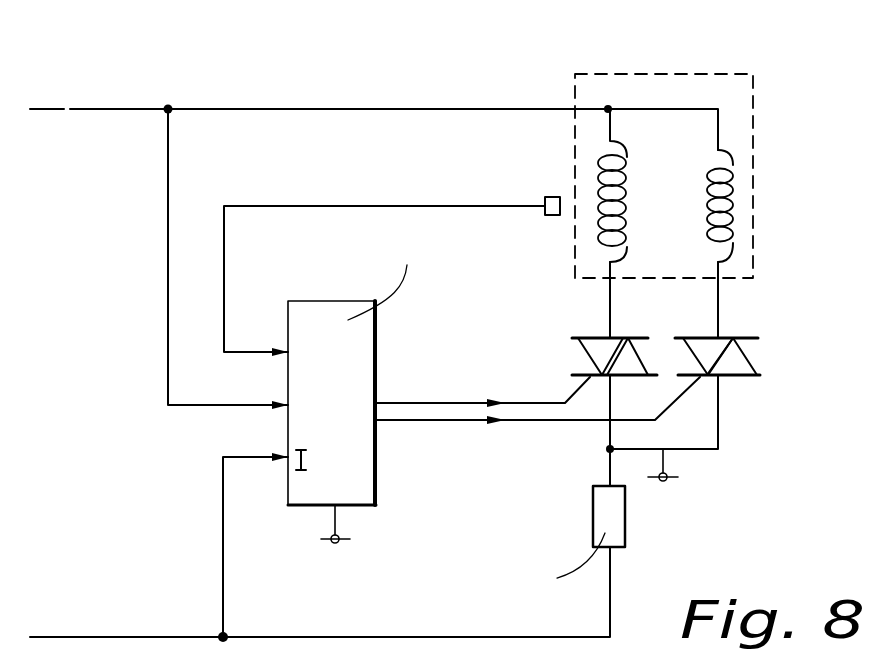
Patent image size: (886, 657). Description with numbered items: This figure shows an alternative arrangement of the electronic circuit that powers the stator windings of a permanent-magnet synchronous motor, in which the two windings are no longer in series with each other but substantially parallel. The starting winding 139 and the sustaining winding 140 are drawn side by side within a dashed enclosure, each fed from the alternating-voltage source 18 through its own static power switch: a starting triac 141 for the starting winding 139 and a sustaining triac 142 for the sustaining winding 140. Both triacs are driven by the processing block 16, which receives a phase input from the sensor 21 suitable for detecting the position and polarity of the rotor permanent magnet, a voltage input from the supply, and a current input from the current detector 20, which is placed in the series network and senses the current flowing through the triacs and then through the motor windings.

The processing block 16 is at (367, 360).
The alternating-voltage source 18 is at (665, 482).
The current detector 20 is at (613, 522).
The sensor 21 is at (552, 216).
The starting winding 139 is at (735, 162).
The sustaining winding 140 is at (595, 162).
The starting triac 141 is at (718, 395).
The sustaining triac 142 is at (610, 387).